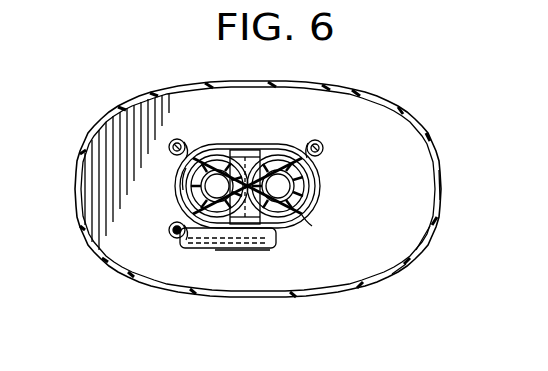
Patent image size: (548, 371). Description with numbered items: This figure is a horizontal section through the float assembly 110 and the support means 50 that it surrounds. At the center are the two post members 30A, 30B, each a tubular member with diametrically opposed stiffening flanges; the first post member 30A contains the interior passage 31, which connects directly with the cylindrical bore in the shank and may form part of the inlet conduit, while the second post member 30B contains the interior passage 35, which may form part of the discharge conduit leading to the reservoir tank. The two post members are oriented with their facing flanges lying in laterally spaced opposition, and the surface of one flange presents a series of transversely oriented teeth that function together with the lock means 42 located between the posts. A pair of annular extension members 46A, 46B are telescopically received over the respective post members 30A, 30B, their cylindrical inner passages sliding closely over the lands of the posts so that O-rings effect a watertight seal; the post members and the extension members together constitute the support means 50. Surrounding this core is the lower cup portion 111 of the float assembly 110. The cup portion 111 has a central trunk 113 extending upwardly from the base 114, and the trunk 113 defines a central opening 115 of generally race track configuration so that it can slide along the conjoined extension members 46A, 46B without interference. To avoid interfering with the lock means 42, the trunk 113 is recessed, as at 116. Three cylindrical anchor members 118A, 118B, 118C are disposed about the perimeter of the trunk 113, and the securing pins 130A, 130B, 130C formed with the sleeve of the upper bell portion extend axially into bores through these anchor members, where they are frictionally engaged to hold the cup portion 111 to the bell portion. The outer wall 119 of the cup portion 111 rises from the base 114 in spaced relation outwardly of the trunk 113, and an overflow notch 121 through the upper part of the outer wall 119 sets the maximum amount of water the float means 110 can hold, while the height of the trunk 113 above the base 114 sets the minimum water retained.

The float assembly 110 is at (410, 80).
The cup portion 111 is at (424, 102).
The central trunk 113 is at (322, 199).
The base 114 is at (397, 248).
The central opening 115 is at (298, 228).
The recess 116 is at (249, 249).
The cylindrical anchor member 118A is at (323, 149).
The cylindrical anchor member 118B is at (180, 139).
The cylindrical anchor member 118C is at (170, 229).
The outer wall 119 is at (430, 236).
The overflow notch 121 is at (442, 183).
The securing pin 130A is at (322, 158).
The securing pin 130B is at (170, 144).
The securing pin 130C is at (172, 236).
The post member 30A is at (188, 188).
The post member 30B is at (284, 163).
The interior passage 31 is at (187, 186).
The interior passage 35 is at (285, 214).
The lock means 42 is at (214, 256).
The annular extension member 46A is at (214, 162).
The annular extension member 46B is at (322, 221).
The support means 50 is at (271, 138).